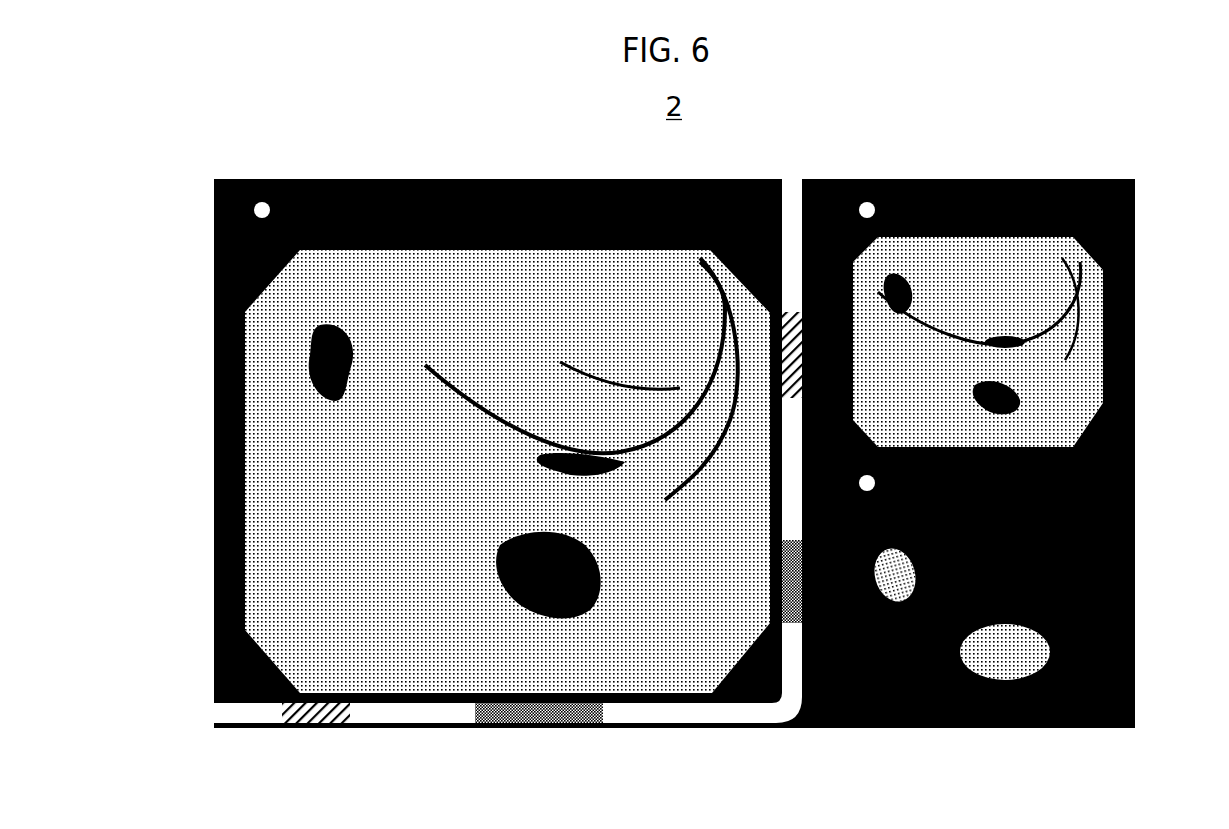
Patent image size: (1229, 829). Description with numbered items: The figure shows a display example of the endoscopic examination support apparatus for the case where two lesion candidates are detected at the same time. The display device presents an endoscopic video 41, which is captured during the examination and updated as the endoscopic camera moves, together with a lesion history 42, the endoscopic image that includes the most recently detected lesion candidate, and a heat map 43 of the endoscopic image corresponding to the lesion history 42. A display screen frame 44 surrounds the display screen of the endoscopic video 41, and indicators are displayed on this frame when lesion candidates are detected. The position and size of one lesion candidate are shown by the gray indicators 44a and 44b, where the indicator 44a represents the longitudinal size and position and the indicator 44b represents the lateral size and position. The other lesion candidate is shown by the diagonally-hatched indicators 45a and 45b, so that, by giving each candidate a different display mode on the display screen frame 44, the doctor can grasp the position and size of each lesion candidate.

The endoscopic video 41 is at (206, 190).
The lesion history 42 is at (1138, 260).
The heat map 43 is at (1138, 558).
The display screen frame 44 is at (222, 713).
The indicator 44a is at (788, 626).
The indicator 44b is at (482, 724).
The indicator 45a is at (787, 310).
The indicator 45b is at (292, 724).